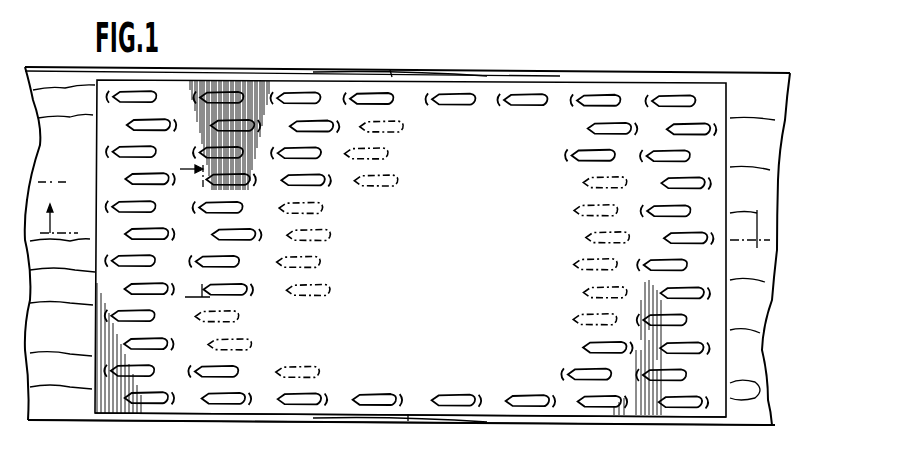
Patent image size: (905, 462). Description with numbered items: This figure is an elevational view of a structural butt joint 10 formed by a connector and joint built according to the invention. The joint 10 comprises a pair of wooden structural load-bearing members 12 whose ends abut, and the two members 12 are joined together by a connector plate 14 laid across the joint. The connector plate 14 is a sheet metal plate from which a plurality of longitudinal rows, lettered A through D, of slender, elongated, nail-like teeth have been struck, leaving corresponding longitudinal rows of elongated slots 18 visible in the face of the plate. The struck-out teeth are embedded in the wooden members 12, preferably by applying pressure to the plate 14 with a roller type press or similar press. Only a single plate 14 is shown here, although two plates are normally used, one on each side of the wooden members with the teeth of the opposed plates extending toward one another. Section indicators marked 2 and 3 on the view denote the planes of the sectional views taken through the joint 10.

The structural butt joint 10 is at (392, 427).
The structural load-bearing member 12 is at (558, 430).
The connector plate 14 is at (657, 417).
The elongated slot 18 is at (240, 238).
The section line 2- 2 is at (405, 226).
The section line 3- 3 is at (195, 223).